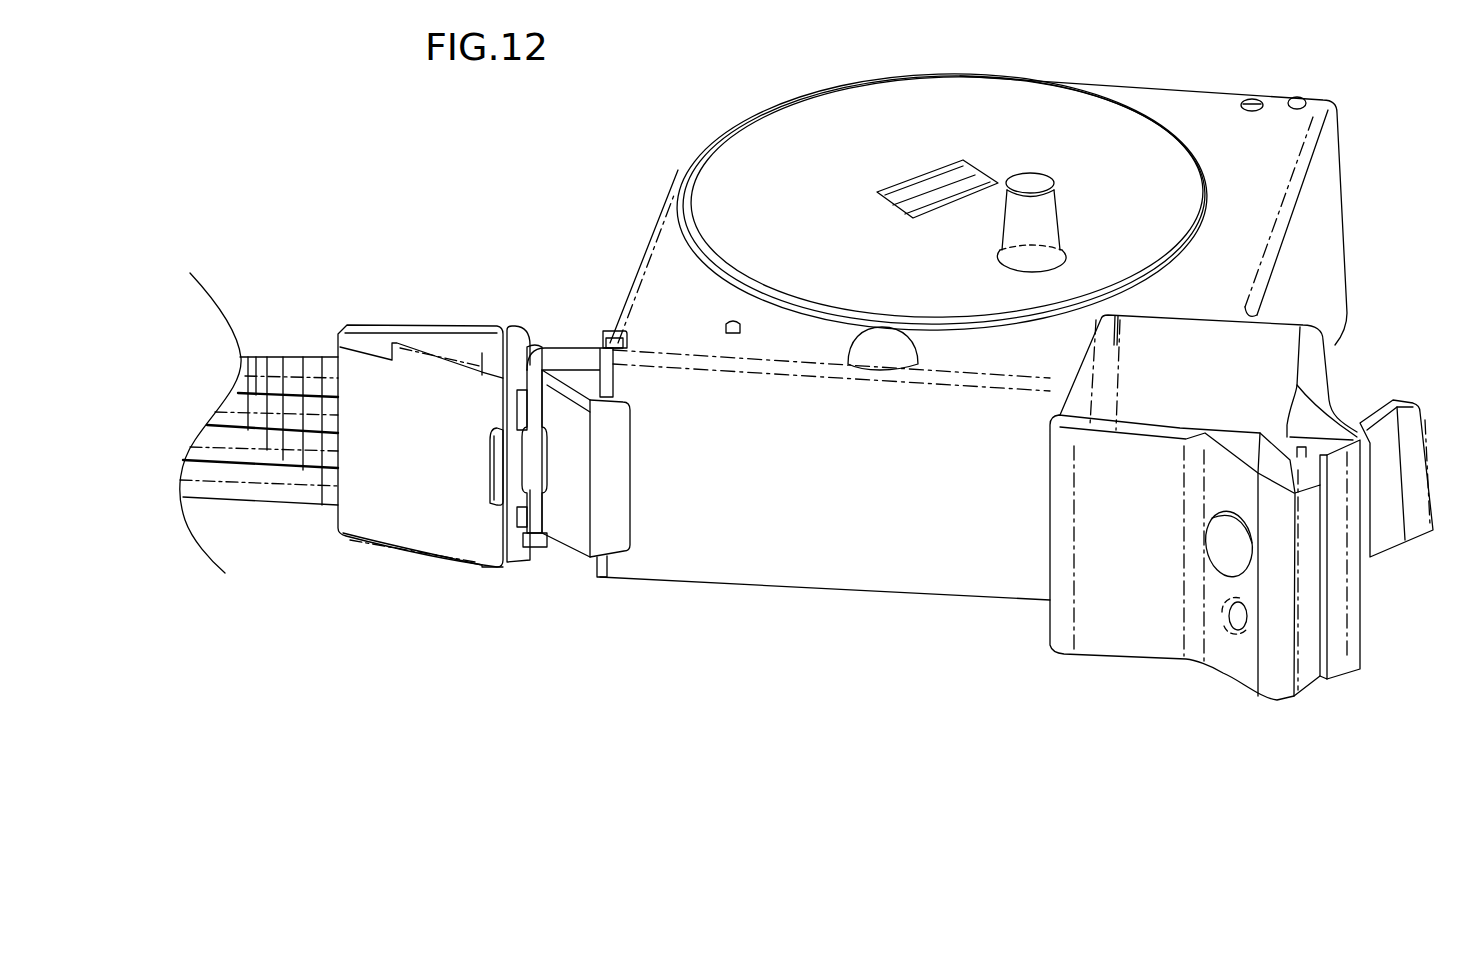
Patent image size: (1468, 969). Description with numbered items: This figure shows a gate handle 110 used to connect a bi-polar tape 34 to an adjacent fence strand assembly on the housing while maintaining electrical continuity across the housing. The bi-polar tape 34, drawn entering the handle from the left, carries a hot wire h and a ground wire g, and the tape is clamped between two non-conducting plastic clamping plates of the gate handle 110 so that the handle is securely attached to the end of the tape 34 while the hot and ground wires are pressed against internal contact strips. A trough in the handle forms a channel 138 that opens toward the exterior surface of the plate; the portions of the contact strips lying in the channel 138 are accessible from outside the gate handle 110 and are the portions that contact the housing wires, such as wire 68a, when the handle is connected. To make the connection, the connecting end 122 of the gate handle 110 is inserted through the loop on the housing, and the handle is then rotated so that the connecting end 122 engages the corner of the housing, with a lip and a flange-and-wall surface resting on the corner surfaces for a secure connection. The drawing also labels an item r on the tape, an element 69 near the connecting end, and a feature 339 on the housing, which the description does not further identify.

The bi-polar tape 34 is at (227, 498).
The hot wire h is at (258, 392).
The strap row r is at (272, 433).
The ground wire g is at (290, 467).
The gate handle 110 is at (430, 580).
The channel 138 is at (518, 392).
The wire 68a is at (561, 357).
The pin 69 is at (542, 457).
The connecting end 122 is at (612, 520).
The dome 339 is at (895, 345).